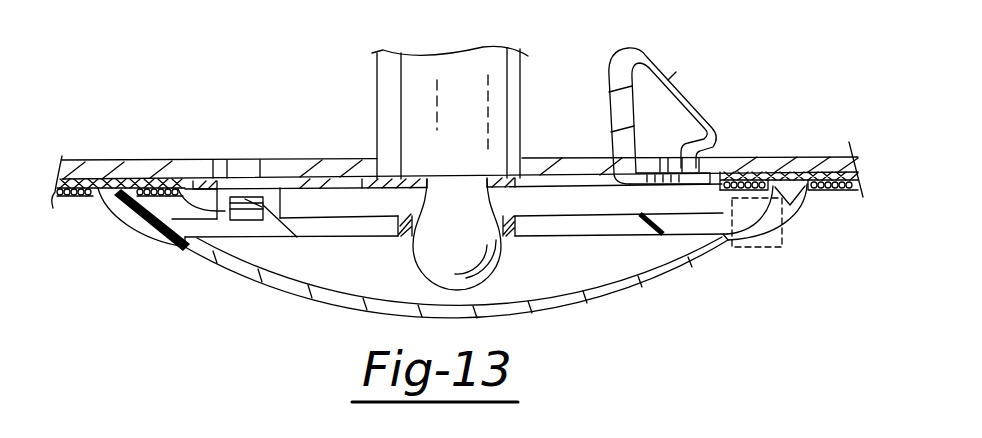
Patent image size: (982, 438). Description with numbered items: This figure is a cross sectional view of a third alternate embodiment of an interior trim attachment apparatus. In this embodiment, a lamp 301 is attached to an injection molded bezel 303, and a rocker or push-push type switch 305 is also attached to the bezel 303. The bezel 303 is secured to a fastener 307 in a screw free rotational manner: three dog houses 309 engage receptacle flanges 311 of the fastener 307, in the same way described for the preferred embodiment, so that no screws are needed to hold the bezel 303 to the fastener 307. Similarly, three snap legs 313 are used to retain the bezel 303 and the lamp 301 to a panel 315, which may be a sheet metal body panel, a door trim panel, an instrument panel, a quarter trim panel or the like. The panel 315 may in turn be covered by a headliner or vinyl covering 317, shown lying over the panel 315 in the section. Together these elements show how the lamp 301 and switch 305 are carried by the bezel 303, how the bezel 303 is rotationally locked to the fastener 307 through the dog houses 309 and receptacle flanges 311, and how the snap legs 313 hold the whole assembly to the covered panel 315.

The lamp 301 is at (453, 263).
The injection molded bezel 303 is at (133, 219).
The rocker or push-push type switch 305 is at (782, 240).
The fastener 307 is at (309, 180).
The dog houses 309 is at (181, 184).
The receptacle flanges 311 is at (243, 196).
The snap legs 313 is at (664, 88).
The panel 315 is at (756, 163).
The headliner or vinyl covering 317 is at (790, 175).